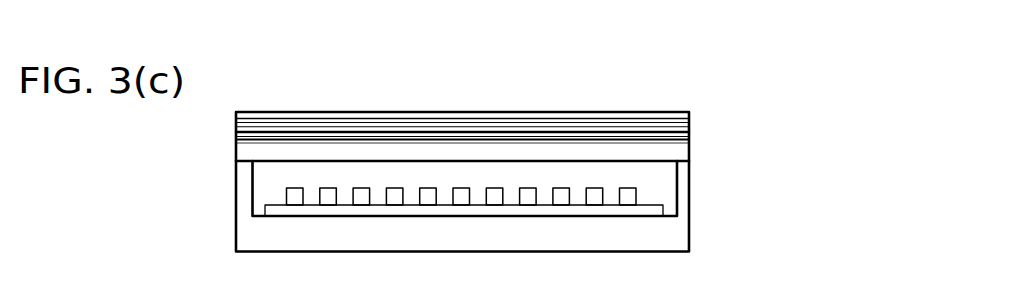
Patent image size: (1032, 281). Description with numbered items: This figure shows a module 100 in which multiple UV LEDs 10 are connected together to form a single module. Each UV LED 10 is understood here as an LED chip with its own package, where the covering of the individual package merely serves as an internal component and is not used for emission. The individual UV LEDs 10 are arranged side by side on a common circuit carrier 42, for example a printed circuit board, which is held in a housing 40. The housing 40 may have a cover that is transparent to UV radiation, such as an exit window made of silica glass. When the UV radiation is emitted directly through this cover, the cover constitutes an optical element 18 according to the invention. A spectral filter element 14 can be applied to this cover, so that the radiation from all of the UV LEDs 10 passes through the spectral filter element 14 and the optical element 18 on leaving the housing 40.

The display device / backlight unit 100 is at (824, 122).
The spectral filter element 14 is at (662, 123).
The optical element 18 is at (249, 148).
The UV LED 10 is at (292, 194).
The circuit carrier 42 is at (652, 211).
The housing 40 is at (670, 240).